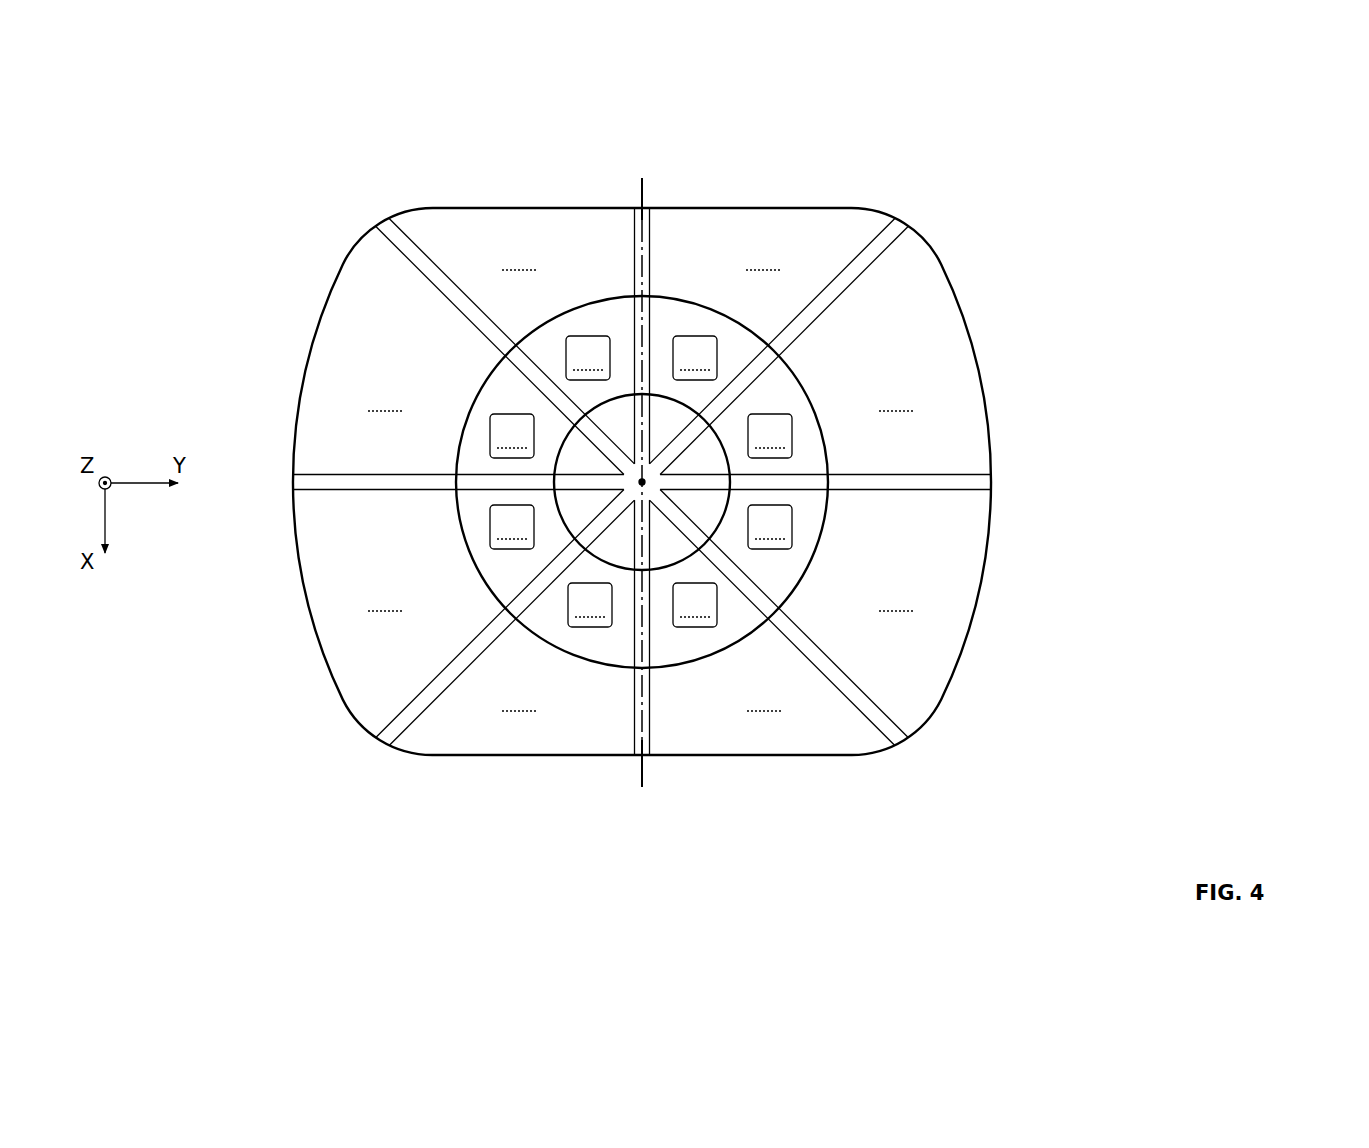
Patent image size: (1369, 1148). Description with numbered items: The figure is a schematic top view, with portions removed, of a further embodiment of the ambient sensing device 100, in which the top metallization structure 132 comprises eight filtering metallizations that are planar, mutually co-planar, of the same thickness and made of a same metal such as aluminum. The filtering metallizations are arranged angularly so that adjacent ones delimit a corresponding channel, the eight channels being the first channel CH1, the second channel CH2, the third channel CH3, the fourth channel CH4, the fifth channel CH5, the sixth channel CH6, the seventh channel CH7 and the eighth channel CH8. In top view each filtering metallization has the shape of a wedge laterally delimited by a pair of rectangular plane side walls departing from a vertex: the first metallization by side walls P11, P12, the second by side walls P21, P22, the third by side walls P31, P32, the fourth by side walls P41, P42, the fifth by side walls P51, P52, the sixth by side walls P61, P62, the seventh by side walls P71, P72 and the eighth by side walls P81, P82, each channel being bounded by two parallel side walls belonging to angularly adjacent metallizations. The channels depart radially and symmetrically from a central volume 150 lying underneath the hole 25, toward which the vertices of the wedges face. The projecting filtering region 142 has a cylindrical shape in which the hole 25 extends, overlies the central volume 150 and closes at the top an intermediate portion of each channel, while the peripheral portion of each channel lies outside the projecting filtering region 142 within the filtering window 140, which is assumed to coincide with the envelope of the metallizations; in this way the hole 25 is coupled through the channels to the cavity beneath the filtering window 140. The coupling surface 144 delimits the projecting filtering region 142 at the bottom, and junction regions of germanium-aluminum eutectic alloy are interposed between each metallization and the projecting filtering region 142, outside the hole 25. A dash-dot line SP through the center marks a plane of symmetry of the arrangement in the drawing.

The ambient sensing device 100 is at (1132, 153).
The top metallization structure 132 is at (986, 291).
The filtering window 140 is at (943, 369).
The projecting filtering region 142 is at (738, 322).
The coupling surface 144 is at (781, 574).
The central volume 150 is at (627, 481).
The hole 25 is at (708, 502).
The symmetry plane SP is at (646, 270).
The first channel CH1 is at (651, 726).
The second channel CH2 is at (437, 698).
The third channel CH3 is at (353, 485).
The fourth channel CH4 is at (411, 257).
The fifth channel CH5 is at (631, 225).
The sixth channel CH6 is at (858, 257).
The seventh channel CH7 is at (954, 474).
The eighth channel CH8 is at (883, 712).
The first side wall of first filtering metallization P11 is at (873, 733).
The second side wall of first filtering metallization P12 is at (657, 744).
The first side wall of second filtering metallization P21 is at (632, 738).
The second side wall of second filtering metallization P22 is at (414, 734).
The first side wall of third filtering metallization P31 is at (395, 709).
The second side wall of third filtering metallization P32 is at (319, 492).
The first side wall of fourth filtering metallization P41 is at (324, 472).
The second side wall of fourth filtering metallization P42 is at (390, 248).
The first side wall of fifth filtering metallization P51 is at (415, 236).
The second side wall of fifth filtering metallization P52 is at (633, 240).
The first side wall of sixth filtering metallization P61 is at (654, 227).
The second side wall of sixth filtering metallization P62 is at (872, 232).
The first side wall of seventh filtering metallization P71 is at (890, 255).
The second side wall of seventh filtering metallization P72 is at (974, 472).
The first side wall of eighth filtering metallization P81 is at (976, 492).
The second side wall of eighth filtering metallization P82 is at (901, 723).